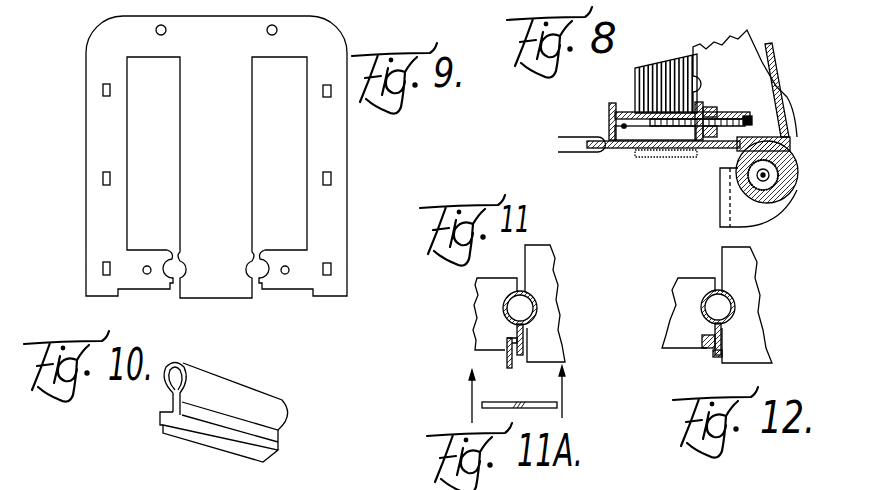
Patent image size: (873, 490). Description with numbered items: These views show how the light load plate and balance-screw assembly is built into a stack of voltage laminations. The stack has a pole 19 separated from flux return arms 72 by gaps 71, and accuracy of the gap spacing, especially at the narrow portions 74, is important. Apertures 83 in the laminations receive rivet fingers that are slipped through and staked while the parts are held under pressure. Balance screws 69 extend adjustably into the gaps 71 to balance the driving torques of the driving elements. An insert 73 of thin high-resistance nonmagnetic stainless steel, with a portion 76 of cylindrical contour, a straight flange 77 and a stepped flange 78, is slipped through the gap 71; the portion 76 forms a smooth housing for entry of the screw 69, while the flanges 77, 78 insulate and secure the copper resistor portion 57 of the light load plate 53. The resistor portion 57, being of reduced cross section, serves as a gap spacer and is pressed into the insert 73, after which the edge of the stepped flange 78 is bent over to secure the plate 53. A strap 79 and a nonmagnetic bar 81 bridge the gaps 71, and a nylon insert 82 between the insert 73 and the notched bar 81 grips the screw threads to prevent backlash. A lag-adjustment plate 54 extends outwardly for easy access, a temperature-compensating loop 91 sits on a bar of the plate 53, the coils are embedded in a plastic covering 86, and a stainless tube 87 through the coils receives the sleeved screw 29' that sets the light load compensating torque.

In FIG. 9, the pole 19 is at (227, 287).
In FIG. 9, the gaps 71 is at (157, 257).
In FIG. 9, the flux return arms 72 is at (133, 275).
In FIG. 9, the narrow portions 74 is at (183, 255).
In FIG. 9, the apertures 83 is at (332, 178).
In FIG. 8, the portion of cylindrical contour 76 is at (625, 108).
In FIG. 11, the portion of cylindrical contour 76 is at (510, 298).
In FIG. 12, the portion of cylindrical contour 76 is at (705, 292).
In FIG. 10, the portion of cylindrical contour 76 is at (202, 381).
In FIG. 8, the insert 73 is at (624, 128).
In FIG. 11, the insert 73 is at (543, 293).
In FIG. 12, the insert 73 is at (742, 298).
In FIG. 10, the insert 73 is at (267, 403).
In FIG. 11, the straight flange 77 is at (527, 343).
In FIG. 12, the straight flange 77 is at (724, 347).
In FIG. 10, the straight flange 77 is at (278, 441).
In FIG. 11, the stepped flange 78 is at (505, 358).
In FIG. 12, the stepped flange 78 is at (708, 353).
In FIG. 10, the stepped flange 78 is at (163, 426).
In FIG. 8, the strap 79 is at (608, 108).
In FIG. 8, the nylon insert 82 is at (701, 106).
In FIG. 8, the bar 81 is at (712, 110).
In FIG. 8, the balance screws 69 is at (745, 121).
In FIG. 8, the lag-adjustment plate 54 is at (773, 48).
In FIG. 8, the temperature-compensating loop 91 is at (560, 140).
In FIG. 8, the plastic covering 86 is at (740, 185).
In FIG. 8, the tube 87 is at (785, 196).
In FIG. 8, the screw 29' is at (786, 196).
In FIG. 11A, the resistor portion 57 is at (518, 402).
In FIG. 11A, the light load plate 53 is at (542, 412).
In FIG. 12, the light load plate 53 is at (713, 360).